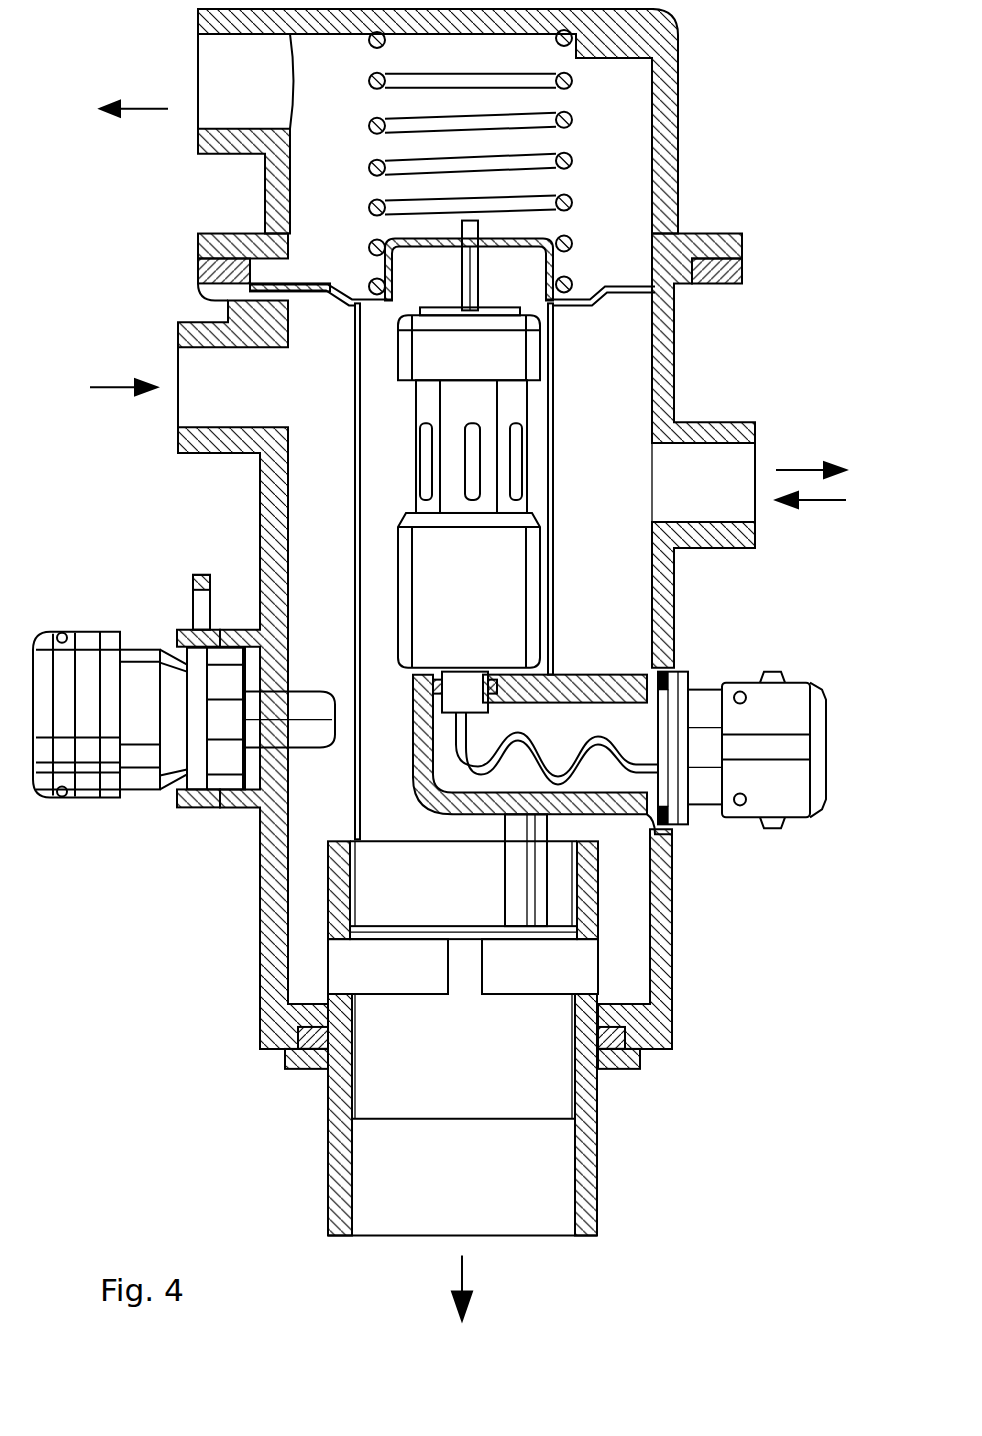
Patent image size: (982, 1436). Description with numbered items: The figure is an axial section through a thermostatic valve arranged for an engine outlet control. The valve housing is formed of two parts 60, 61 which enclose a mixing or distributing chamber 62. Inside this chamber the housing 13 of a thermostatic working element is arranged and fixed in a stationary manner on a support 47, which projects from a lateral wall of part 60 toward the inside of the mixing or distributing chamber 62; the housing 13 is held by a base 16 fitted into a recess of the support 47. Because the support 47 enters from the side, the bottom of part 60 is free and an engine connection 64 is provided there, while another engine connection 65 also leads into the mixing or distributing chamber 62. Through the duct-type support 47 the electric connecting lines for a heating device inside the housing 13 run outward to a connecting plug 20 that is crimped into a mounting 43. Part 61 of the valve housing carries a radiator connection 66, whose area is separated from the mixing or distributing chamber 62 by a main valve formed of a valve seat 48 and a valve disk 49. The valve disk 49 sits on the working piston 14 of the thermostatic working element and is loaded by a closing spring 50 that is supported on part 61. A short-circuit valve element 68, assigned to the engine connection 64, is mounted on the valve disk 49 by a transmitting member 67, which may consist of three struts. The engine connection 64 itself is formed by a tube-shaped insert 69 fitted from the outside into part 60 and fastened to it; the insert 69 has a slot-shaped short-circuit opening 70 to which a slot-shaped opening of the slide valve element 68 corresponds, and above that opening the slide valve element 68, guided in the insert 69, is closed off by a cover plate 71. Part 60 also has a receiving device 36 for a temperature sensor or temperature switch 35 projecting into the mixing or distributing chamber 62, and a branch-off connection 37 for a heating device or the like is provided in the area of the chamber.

The housing of the thermostatic working element 13 is at (508, 482).
The working piston 14 is at (480, 275).
The base 16 is at (492, 700).
The connecting plug 20 is at (795, 690).
The temperature sensor or temperature switch 35 is at (102, 800).
The receiving device 36 is at (232, 808).
The branch-off connection 37 is at (735, 552).
The mounting 43 is at (690, 662).
The support 47 is at (420, 785).
The valve seat 48 is at (265, 222).
The valve disk 49 is at (400, 236).
The closing spring 50 is at (572, 120).
The part of the valve housing 60 is at (260, 925).
The part of the valve housing 61 is at (668, 163).
The mixing or distributing chamber 62 is at (635, 378).
The engine connection 64 is at (380, 1203).
The engine connection 65 is at (178, 413).
The radiator connection 66 is at (198, 48).
The transmitting member 67 is at (355, 565).
The short-circuit valve element 68 is at (557, 1103).
The tube-shaped insert 69 is at (328, 1133).
The short-circuit opening 70 is at (565, 975).
The cover plate 71 is at (565, 918).